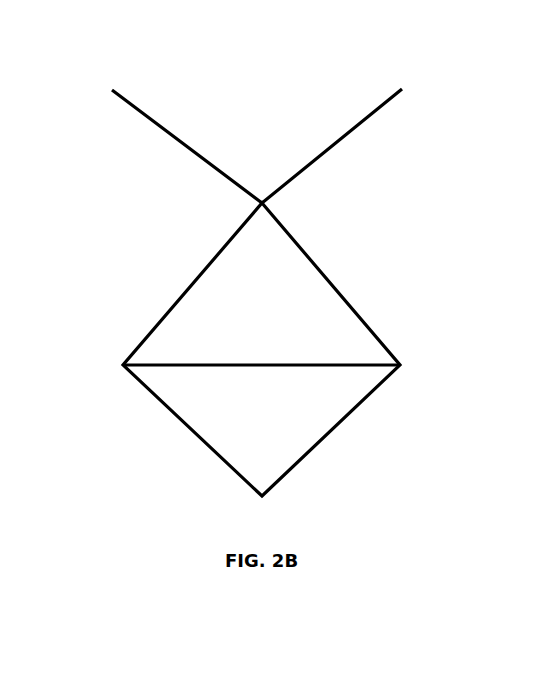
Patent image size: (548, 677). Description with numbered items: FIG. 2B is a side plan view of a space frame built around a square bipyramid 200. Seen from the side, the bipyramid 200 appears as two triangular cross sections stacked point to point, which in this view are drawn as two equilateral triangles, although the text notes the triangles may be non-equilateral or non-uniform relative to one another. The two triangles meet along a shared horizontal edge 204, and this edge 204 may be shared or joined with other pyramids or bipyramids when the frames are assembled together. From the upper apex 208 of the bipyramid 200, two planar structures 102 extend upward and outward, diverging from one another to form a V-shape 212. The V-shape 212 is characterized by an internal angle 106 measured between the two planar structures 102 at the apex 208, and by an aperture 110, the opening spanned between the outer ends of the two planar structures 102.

The planar structures 102 is at (187, 146).
The internal angle 106 is at (288, 172).
The aperture 110 is at (401, 62).
The square bipyramid 200 is at (343, 293).
The edge 204 is at (153, 368).
The apex 208 is at (252, 200).
The V-shape 212 is at (96, 87).